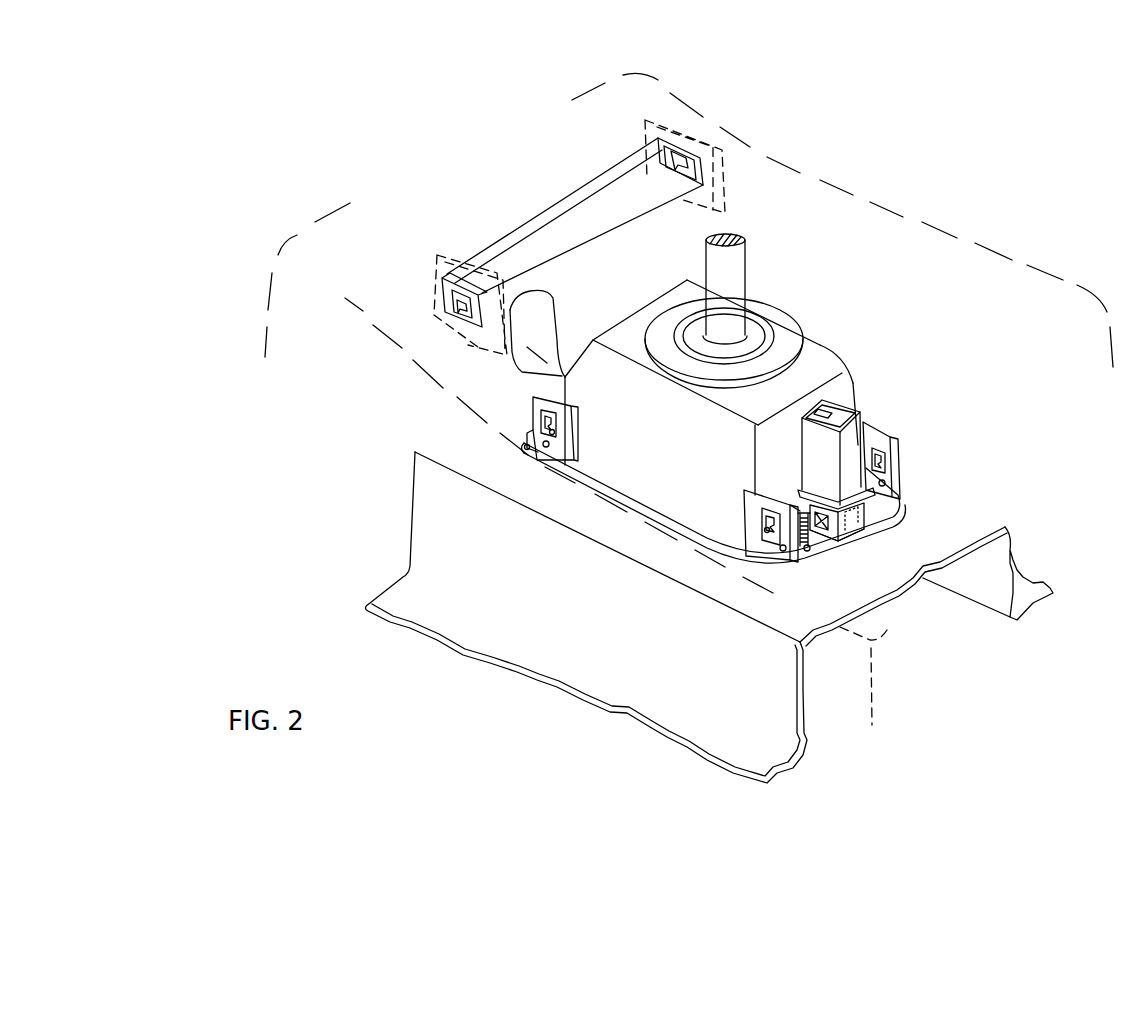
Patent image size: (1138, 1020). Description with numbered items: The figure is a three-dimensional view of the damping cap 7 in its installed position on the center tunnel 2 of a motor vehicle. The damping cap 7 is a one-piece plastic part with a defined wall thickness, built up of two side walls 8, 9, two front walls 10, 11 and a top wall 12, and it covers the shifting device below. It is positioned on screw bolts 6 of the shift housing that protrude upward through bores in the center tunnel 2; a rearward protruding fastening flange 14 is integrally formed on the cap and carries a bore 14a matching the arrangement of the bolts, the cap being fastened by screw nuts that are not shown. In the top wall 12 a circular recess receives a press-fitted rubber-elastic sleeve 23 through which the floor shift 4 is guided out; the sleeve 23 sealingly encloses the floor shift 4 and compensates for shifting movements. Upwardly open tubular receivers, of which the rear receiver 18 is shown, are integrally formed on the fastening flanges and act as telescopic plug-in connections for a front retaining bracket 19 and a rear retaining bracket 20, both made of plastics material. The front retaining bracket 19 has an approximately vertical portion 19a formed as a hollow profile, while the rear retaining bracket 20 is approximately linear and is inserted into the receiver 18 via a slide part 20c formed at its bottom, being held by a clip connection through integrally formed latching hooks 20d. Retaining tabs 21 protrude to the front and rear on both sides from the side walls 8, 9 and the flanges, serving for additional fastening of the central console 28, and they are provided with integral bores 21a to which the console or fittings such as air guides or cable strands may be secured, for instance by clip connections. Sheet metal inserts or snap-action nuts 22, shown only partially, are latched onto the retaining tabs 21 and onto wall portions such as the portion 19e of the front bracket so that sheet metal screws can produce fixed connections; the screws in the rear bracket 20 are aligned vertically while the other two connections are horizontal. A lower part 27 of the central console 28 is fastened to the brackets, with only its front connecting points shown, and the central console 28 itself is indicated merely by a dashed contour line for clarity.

The center tunnel 2 is at (1012, 556).
The floor shift 4 is at (740, 260).
The screw bolts 6 is at (800, 510).
The damping cap 7 is at (731, 369).
The side wall 8 is at (684, 474).
The side wall 9 is at (848, 388).
The front wall 10 is at (663, 297).
The front wall 11 is at (796, 450).
The top wall 12 is at (815, 352).
The fastening flange 14 is at (830, 542).
The bore 14a is at (803, 545).
The tubular receiver 18 is at (850, 533).
The front retaining bracket 19 is at (533, 208).
The vertical portion 19a is at (612, 306).
The wall portion 19e is at (443, 290).
The rear retaining bracket 20 is at (902, 517).
The slide part 20c is at (855, 522).
The latching hooks 20d is at (823, 522).
The retaining tabs 21 is at (535, 397).
The bores 21a is at (527, 447).
The snap-action nuts 22 is at (455, 310).
The rubber-elastic sleeve 23 is at (782, 307).
The lower part 27 is at (723, 157).
The central console 28 is at (345, 298).